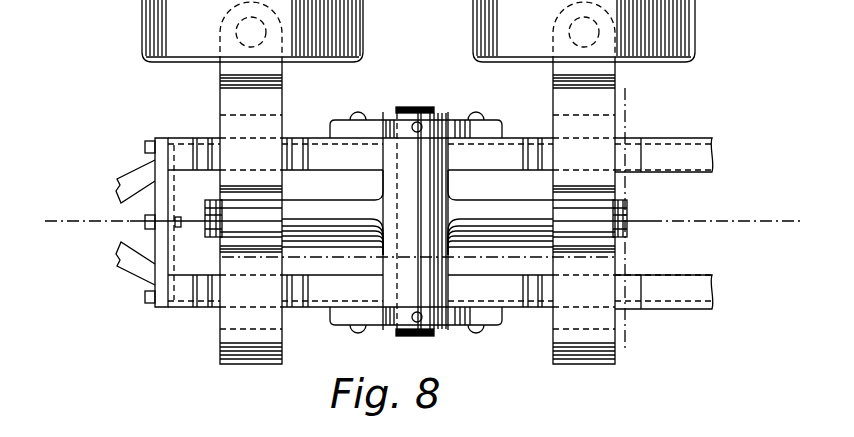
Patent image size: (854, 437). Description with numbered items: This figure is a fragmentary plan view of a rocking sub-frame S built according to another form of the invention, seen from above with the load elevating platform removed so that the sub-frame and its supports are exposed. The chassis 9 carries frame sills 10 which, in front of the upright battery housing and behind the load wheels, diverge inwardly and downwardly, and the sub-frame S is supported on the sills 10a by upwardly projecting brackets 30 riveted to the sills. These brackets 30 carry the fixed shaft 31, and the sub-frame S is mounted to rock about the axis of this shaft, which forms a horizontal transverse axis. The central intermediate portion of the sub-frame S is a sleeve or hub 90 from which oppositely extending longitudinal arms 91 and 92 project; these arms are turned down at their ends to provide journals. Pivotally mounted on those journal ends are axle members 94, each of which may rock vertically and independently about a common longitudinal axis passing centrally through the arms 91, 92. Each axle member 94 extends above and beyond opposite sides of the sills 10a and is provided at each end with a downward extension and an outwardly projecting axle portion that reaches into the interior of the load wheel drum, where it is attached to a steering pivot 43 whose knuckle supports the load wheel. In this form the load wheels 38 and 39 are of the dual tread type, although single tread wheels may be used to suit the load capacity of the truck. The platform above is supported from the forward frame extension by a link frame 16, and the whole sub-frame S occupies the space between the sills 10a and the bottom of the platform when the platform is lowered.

The load carrying wheel 38 is at (163, 22).
The load carrying wheel 39 is at (672, 17).
The steering pivot 43 is at (248, 34).
The axle member 94 is at (237, 125).
The frame sill 10 is at (606, 100).
The sill 10a is at (695, 154).
The chassis 9 is at (78, 236).
The rocking sub-frame S is at (403, 156).
The bracket 30 is at (363, 128).
The fixed shaft 31 is at (418, 339).
The longitudinal arm 91 is at (313, 217).
The longitudinal arm 92 is at (522, 195).
The sleeve or hub 90 is at (422, 272).
The link frame 16 is at (128, 270).